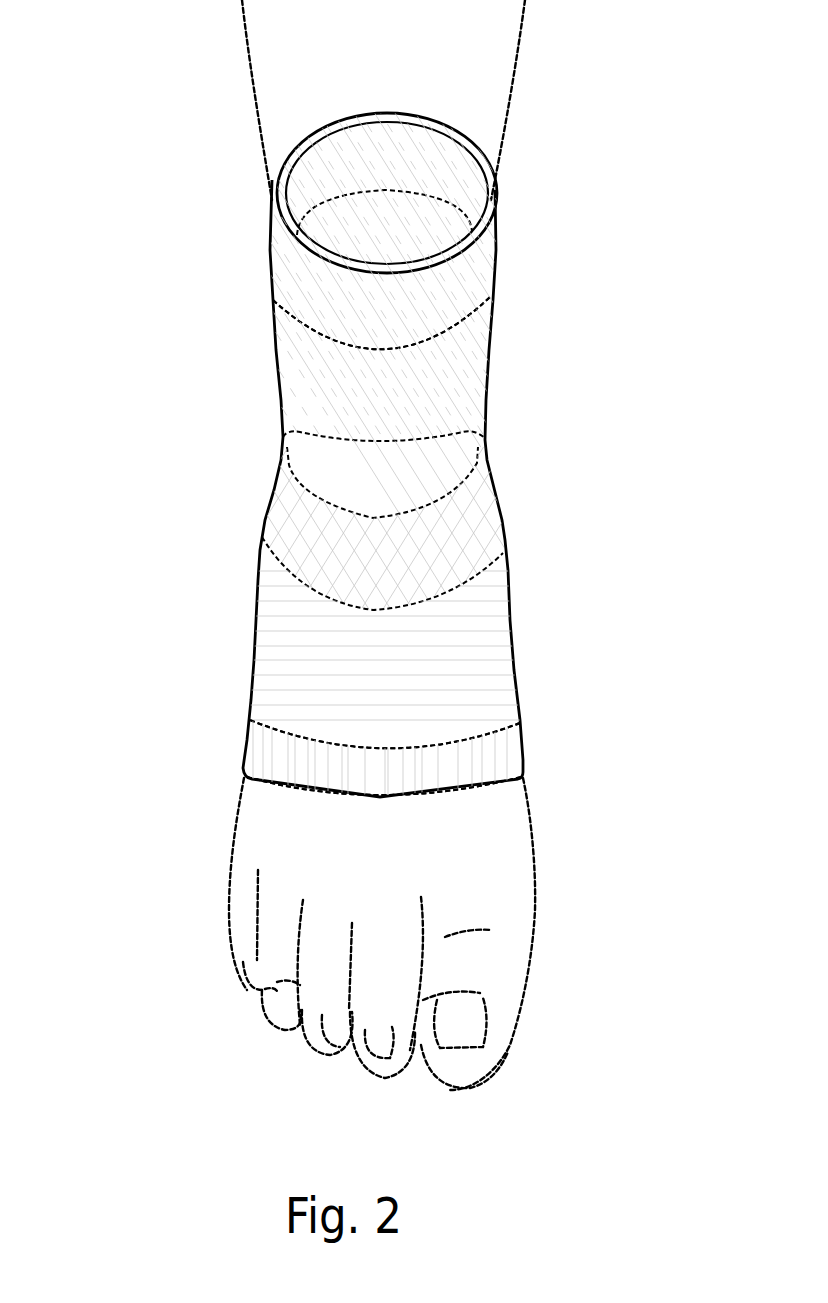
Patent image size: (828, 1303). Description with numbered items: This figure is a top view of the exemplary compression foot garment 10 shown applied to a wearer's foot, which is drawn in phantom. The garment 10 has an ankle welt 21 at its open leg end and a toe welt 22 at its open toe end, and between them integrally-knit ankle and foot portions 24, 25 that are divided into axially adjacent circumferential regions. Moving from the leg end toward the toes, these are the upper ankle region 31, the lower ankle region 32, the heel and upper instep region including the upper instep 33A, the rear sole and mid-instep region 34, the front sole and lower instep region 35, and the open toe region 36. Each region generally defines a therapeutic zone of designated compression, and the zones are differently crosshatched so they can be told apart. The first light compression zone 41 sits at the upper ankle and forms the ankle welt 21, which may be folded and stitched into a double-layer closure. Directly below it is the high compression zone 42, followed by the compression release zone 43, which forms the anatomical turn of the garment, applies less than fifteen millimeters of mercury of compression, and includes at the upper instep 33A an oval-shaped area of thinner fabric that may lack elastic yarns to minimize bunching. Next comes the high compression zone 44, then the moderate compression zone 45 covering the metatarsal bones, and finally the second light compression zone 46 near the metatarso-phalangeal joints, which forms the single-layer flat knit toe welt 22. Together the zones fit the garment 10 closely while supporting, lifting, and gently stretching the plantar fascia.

The foot garment 10 is at (183, 352).
The ankle welt 21 is at (412, 115).
The toe welt 22 is at (474, 793).
The ankle portion 24 is at (520, 237).
The foot portion 25 is at (567, 637).
The upper ankle region 31 is at (290, 267).
The lower ankle region 32 is at (287, 383).
The upper instep 33A is at (310, 463).
The rear sole and mid-instep region 34 is at (273, 535).
The front sole and lower instep region 35 is at (280, 625).
The open toe region 36 is at (250, 758).
The first light compression zone 41 is at (485, 263).
The high compression zone 42 is at (485, 363).
The compression release zone 43 is at (485, 440).
The high compression zone 44 is at (492, 516).
The moderate compression zone 45 is at (480, 680).
The second light compression zone 46 is at (503, 755).